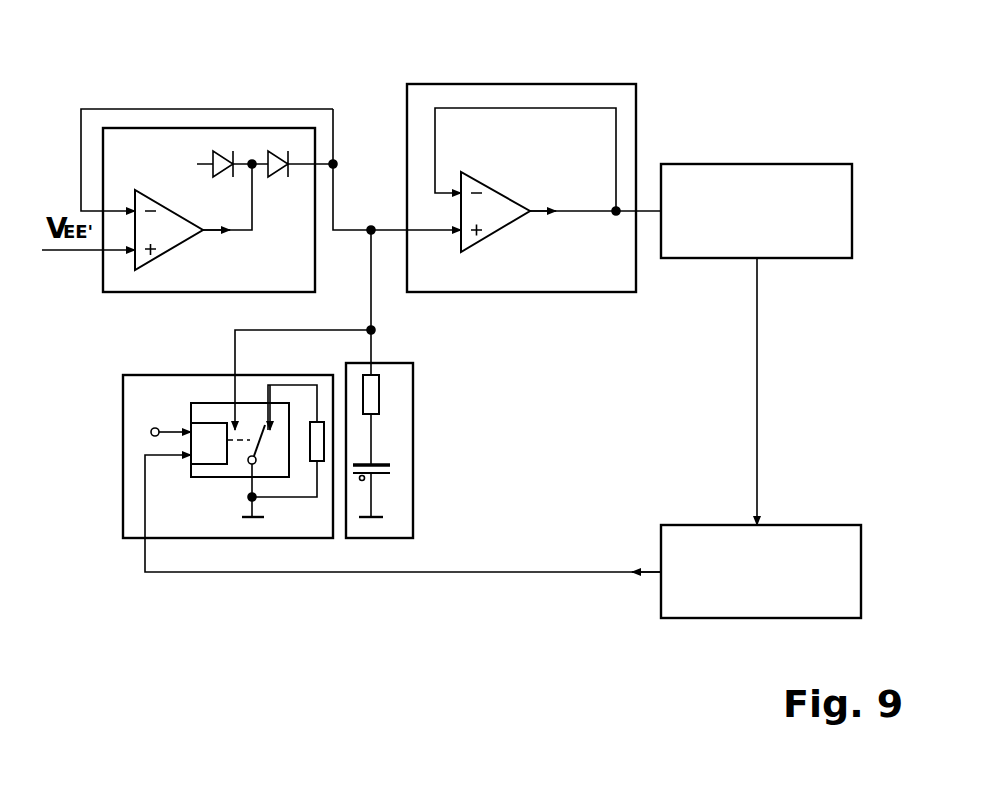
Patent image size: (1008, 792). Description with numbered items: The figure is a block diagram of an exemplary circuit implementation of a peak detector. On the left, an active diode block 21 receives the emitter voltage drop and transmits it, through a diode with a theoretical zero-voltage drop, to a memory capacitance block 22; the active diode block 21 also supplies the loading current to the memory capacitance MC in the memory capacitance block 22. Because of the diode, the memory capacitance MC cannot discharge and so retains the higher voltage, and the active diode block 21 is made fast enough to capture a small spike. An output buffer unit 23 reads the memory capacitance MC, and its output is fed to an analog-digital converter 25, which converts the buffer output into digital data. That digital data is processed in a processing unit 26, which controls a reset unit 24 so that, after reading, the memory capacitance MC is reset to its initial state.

The active diode block 21 is at (210, 128).
The memory capacitance block 22 is at (413, 450).
The output buffer unit 23 is at (521, 84).
The reset unit 24 is at (123, 450).
The analog-digital converter 25 is at (757, 164).
The processing unit 26 is at (820, 525).